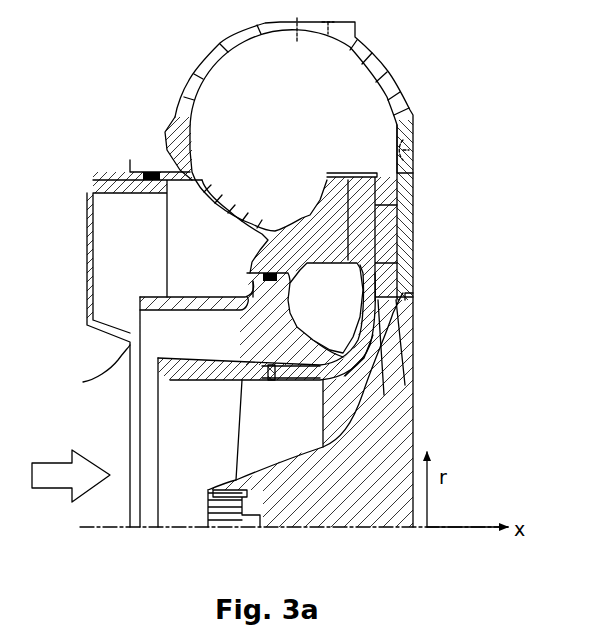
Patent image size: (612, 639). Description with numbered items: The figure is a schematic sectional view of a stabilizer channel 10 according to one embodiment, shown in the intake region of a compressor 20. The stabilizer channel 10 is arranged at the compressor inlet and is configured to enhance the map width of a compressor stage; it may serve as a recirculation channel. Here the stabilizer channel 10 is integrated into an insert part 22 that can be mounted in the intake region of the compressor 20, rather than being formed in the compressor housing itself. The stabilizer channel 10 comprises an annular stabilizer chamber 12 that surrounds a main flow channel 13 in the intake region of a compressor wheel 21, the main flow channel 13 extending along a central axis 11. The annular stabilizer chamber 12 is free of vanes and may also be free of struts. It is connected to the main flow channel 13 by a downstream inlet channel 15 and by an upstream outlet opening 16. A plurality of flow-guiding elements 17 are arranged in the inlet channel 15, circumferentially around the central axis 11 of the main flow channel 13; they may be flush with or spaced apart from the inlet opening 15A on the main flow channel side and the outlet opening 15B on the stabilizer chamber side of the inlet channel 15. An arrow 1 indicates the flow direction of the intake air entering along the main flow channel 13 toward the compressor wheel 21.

The flow direction 1 is at (88, 484).
The stabilizer channel 10 is at (174, 320).
The central axis 11 is at (103, 528).
The annular stabilizer chamber 12 is at (219, 350).
The main flow channel 13 is at (198, 445).
The inlet channel 15 is at (262, 365).
The inlet opening of the inlet channel 15A is at (271, 386).
The outlet opening of the inlet channel 15B is at (266, 360).
The outlet opening 16 is at (124, 358).
The flow-guiding elements 17 is at (269, 360).
The compressor 20 is at (467, 42).
The compressor wheel 21 is at (318, 515).
The insert part 22 is at (360, 347).